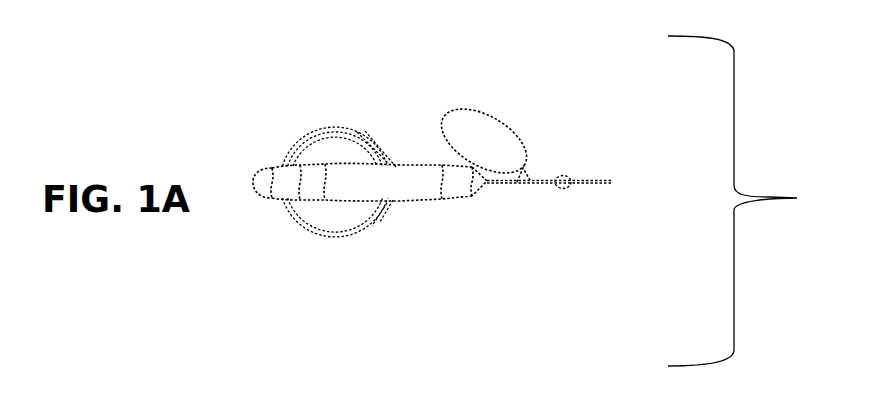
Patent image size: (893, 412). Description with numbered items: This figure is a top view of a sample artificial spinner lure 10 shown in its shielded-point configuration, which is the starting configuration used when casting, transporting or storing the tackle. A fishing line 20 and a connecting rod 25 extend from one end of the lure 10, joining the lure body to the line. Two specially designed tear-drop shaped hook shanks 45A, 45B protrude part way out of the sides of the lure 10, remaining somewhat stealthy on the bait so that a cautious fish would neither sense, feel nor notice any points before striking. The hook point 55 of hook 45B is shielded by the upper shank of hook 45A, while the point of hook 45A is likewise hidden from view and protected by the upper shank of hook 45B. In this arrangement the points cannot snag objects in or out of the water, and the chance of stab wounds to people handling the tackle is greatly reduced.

The artificial lure 10 is at (750, 201).
The fishing line 20 is at (589, 181).
The connecting rod 25 is at (487, 182).
The hook shank 45A is at (372, 133).
The hook shank 45B is at (375, 228).
The shielded-point 55 is at (327, 128).